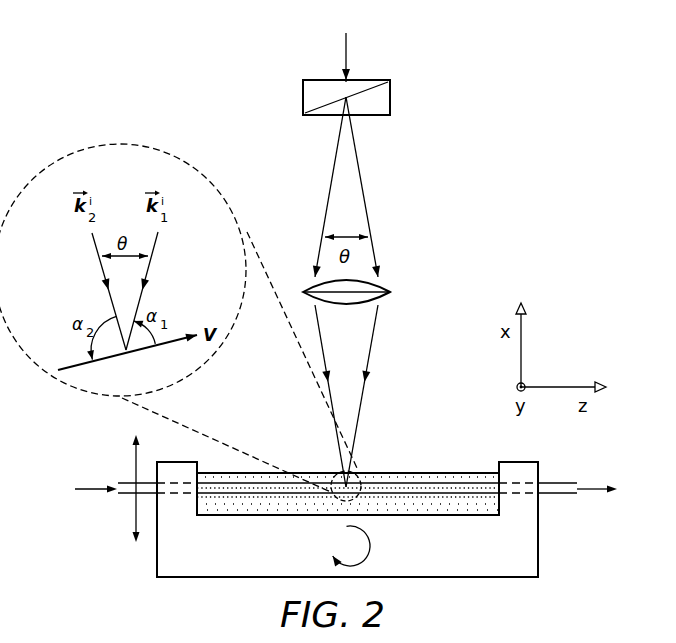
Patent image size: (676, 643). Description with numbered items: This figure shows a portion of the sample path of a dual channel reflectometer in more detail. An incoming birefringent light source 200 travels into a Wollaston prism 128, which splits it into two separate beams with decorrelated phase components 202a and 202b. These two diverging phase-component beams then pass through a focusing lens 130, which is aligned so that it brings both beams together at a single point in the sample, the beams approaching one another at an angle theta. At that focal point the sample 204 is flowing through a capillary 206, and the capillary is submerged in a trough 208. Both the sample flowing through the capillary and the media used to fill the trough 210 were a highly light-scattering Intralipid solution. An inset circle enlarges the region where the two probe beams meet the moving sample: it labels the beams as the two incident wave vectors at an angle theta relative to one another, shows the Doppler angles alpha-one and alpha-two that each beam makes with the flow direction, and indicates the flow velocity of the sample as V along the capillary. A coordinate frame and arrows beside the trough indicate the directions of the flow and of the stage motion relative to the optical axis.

The birefringent light source 200 is at (348, 53).
The Wollaston prism 128 is at (303, 97).
The phase-component beam 202a is at (363, 192).
The phase-component beam 202b is at (330, 192).
The focusing lens 130 is at (391, 292).
The sample 204 is at (432, 488).
The media used to fill the trough 210 is at (418, 512).
The trough 208 is at (157, 556).
The capillary 206 is at (552, 496).